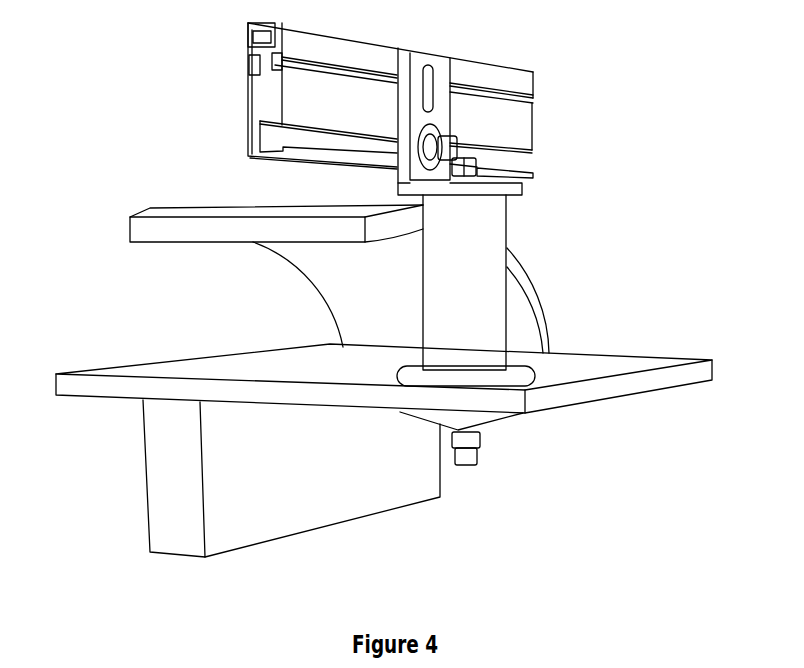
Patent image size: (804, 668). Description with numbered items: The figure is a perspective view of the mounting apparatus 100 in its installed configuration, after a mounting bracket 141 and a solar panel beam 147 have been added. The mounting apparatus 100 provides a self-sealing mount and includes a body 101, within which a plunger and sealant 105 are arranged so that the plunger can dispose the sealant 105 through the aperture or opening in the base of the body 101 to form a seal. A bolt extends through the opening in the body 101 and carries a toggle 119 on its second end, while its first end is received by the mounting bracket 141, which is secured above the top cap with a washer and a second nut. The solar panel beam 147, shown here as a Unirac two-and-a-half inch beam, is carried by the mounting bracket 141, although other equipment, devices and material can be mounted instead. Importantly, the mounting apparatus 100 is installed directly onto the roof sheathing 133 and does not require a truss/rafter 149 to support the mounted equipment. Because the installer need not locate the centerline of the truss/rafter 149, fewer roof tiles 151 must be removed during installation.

The mounting apparatus 100 is at (552, 230).
The body 101 is at (507, 285).
The sealant 105 is at (527, 370).
The toggle 119 is at (497, 423).
The roof sheathing 133 is at (672, 358).
The mounting bracket 141 is at (520, 185).
The solar panel beam 147 is at (513, 70).
The truss/rafter 149 is at (147, 440).
The roof tile 151 is at (182, 210).